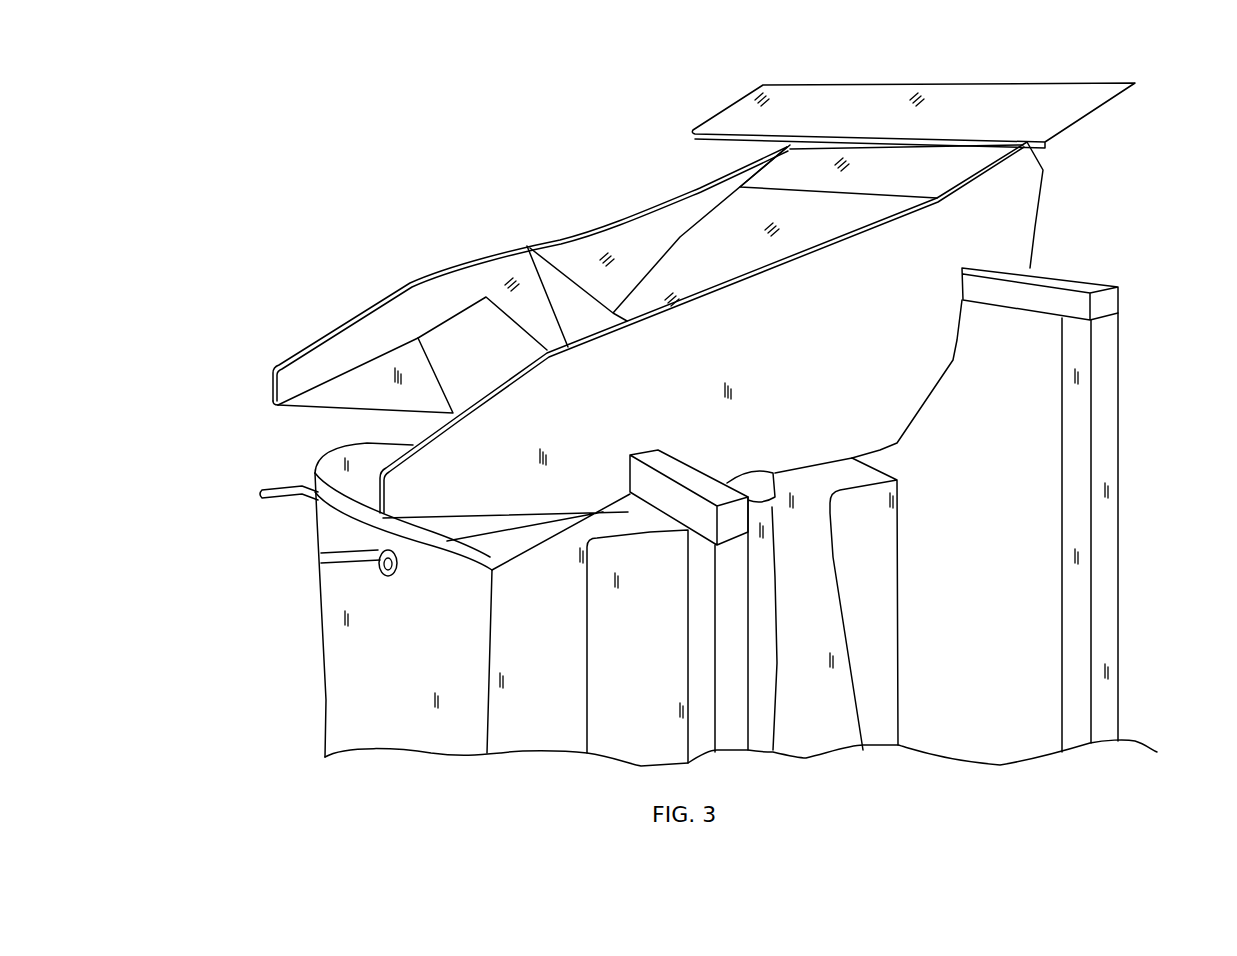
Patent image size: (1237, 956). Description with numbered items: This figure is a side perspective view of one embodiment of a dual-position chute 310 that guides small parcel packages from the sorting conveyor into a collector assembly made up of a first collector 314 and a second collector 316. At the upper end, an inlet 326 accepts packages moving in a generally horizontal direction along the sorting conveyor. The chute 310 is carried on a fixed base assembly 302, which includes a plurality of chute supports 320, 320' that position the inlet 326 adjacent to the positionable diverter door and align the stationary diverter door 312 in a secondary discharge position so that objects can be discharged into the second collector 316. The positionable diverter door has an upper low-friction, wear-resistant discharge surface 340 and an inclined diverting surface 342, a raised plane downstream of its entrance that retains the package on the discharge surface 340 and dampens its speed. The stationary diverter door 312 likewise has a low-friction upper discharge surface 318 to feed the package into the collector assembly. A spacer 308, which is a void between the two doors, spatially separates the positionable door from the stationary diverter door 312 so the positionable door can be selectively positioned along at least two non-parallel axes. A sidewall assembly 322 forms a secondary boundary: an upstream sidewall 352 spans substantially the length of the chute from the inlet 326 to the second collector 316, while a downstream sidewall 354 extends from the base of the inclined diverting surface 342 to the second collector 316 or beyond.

The fixed base assembly 302 is at (850, 465).
The spacer 308 is at (537, 317).
The dual-position chute 310 is at (800, 63).
The stationary diverter door 312 is at (283, 403).
The first collector 314 is at (767, 675).
The second collector 316 is at (375, 687).
The upper discharge surface 318 is at (452, 332).
The chute support 320 is at (1096, 510).
The chute support 320' is at (806, 525).
The sidewall assembly 322 is at (544, 514).
The inlet 326 is at (937, 173).
The discharge surface 340 is at (768, 228).
The inclined diverting surface 342 is at (647, 233).
The upstream sidewall 352 is at (535, 317).
The downstream sidewall 354 is at (460, 273).